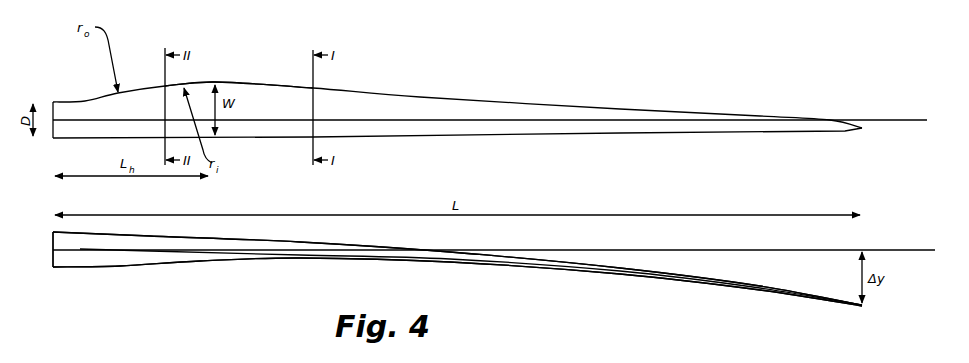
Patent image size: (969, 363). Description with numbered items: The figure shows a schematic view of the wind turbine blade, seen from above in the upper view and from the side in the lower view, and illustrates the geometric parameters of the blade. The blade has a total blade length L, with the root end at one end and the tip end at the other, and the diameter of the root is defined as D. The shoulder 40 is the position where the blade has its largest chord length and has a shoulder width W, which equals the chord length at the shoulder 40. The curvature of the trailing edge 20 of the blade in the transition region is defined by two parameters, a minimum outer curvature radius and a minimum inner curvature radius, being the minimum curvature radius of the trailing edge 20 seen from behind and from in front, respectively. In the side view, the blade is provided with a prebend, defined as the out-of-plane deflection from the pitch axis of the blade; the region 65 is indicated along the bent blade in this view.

The trailing edge 20 is at (340, 256).
The shoulder 40 is at (216, 84).
The pre-bend region 65 is at (205, 258).